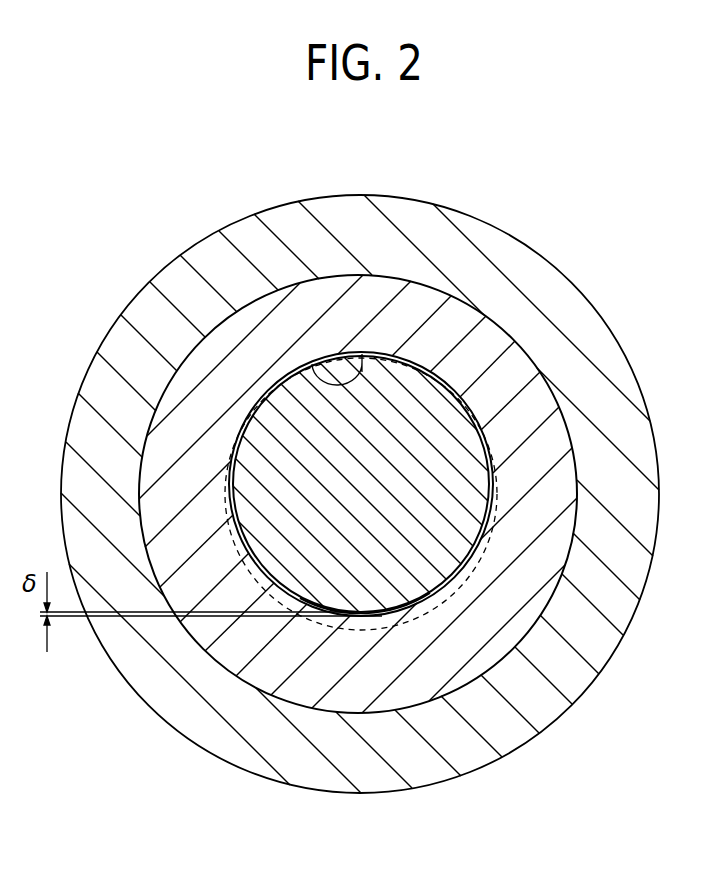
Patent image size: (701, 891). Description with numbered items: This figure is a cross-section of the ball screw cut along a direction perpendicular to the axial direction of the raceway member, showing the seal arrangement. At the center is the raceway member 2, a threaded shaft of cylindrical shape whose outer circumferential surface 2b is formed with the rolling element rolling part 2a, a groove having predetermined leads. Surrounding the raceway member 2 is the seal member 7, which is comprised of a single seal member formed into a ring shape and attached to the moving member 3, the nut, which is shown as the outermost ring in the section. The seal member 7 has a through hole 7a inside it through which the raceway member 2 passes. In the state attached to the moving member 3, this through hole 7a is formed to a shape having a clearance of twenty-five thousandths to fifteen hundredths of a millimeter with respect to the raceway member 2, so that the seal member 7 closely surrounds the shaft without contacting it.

The raceway member 2 is at (393, 417).
The rolling element rolling part 2a is at (412, 594).
The outer circumferential surface 2b is at (445, 597).
The moving member 3 is at (393, 245).
The seal member 7 is at (343, 313).
The through hole 7a is at (312, 366).